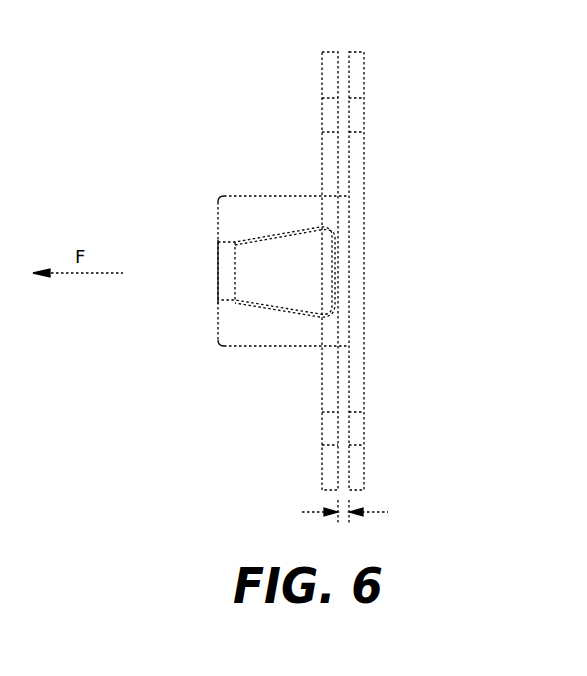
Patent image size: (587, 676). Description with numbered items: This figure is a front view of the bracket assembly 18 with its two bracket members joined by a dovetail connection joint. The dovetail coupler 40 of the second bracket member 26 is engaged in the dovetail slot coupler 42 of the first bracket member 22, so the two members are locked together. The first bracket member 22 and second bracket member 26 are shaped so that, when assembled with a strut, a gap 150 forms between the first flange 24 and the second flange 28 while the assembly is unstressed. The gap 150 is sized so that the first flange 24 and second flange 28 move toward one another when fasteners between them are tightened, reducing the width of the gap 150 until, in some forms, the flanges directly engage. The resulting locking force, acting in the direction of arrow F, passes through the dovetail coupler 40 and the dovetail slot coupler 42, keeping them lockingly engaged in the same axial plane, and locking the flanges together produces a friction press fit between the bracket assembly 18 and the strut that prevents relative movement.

The bracket assembly 18 is at (207, 402).
The first bracket member 22 is at (303, 155).
The first flange 24 is at (318, 67).
The second bracket member 26 is at (407, 230).
The second flange 28 is at (364, 68).
The dovetail coupler 40 is at (265, 277).
The dovetail slot coupler 42 is at (247, 330).
The gap 150 is at (364, 514).